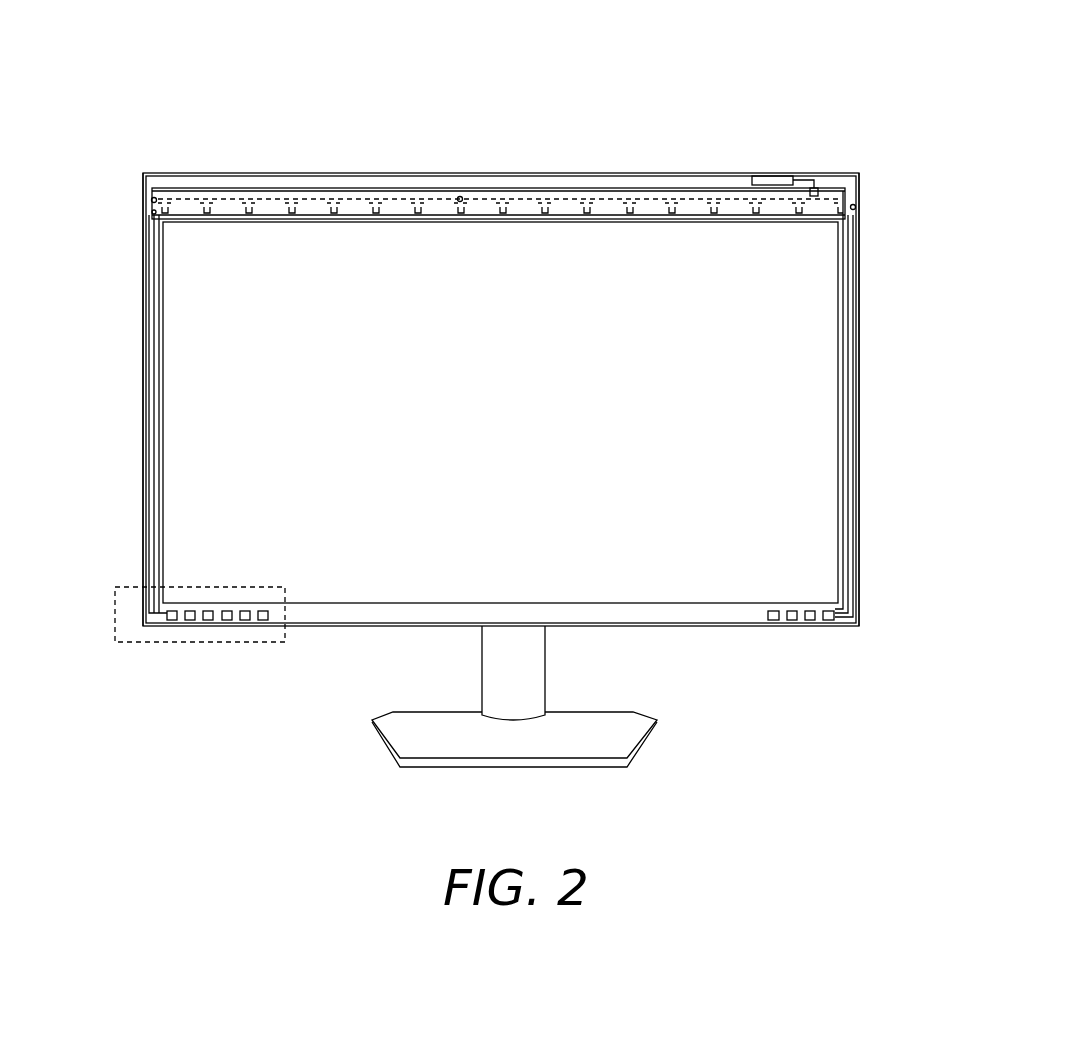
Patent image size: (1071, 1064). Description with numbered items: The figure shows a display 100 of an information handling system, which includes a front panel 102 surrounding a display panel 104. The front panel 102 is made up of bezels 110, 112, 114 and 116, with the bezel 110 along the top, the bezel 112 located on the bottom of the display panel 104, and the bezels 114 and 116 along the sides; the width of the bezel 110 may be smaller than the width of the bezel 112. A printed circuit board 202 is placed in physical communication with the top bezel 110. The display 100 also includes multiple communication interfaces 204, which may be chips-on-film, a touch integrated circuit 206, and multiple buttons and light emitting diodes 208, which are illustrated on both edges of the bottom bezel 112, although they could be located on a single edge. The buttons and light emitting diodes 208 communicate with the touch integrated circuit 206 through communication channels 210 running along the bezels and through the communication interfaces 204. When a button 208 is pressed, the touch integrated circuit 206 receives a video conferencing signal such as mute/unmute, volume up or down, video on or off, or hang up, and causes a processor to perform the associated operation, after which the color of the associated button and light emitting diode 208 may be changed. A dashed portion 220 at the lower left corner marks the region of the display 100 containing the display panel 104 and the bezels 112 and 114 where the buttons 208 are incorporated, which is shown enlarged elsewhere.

The display 100 is at (818, 90).
The front panel 102 is at (230, 160).
The display panel 104 is at (178, 243).
The bezel 110 is at (410, 213).
The bezel 112 is at (455, 626).
The bezel 114 is at (860, 428).
The bezel 116 is at (143, 428).
The printed circuit board 202 is at (608, 185).
The communication interfaces 204 is at (151, 198).
The touch integrated circuit 206 is at (818, 186).
The buttons and light emitting diodes 208 is at (190, 625).
The communication channels 210 is at (152, 362).
The portion 220 is at (125, 643).